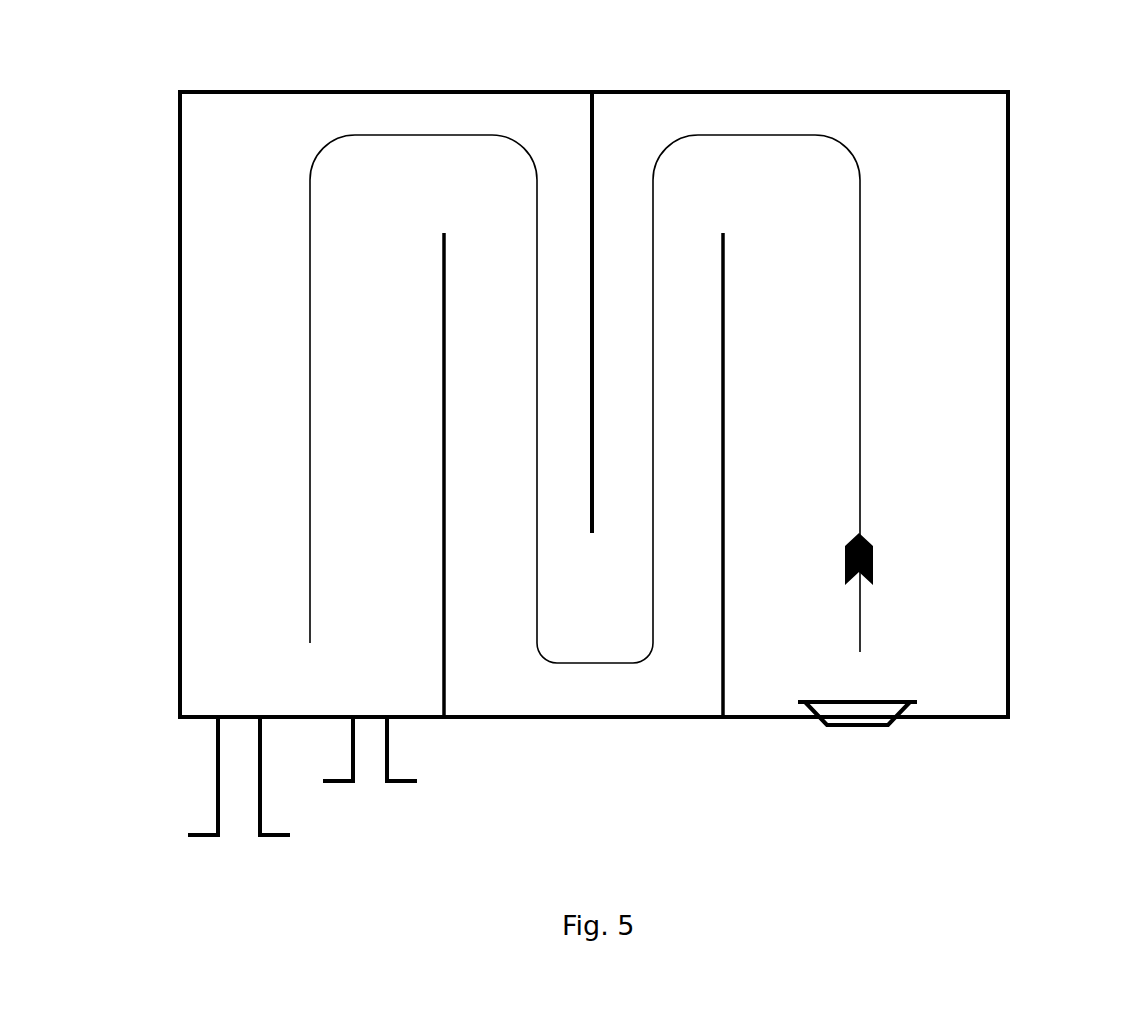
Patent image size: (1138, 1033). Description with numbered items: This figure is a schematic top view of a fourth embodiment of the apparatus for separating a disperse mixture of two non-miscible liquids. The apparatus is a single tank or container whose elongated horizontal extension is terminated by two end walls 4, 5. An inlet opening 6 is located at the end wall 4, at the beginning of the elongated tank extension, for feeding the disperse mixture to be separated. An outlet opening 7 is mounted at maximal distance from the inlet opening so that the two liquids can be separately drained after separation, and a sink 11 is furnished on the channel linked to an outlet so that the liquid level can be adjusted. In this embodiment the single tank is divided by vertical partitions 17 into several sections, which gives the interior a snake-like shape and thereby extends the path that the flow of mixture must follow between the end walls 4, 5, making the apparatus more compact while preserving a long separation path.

The end wall 4 is at (987, 717).
The end wall 5 is at (192, 722).
The inlet opening 6 is at (862, 727).
The outlet opening 7 is at (388, 752).
The sink 11 is at (262, 795).
The vertical partition 17 is at (591, 155).